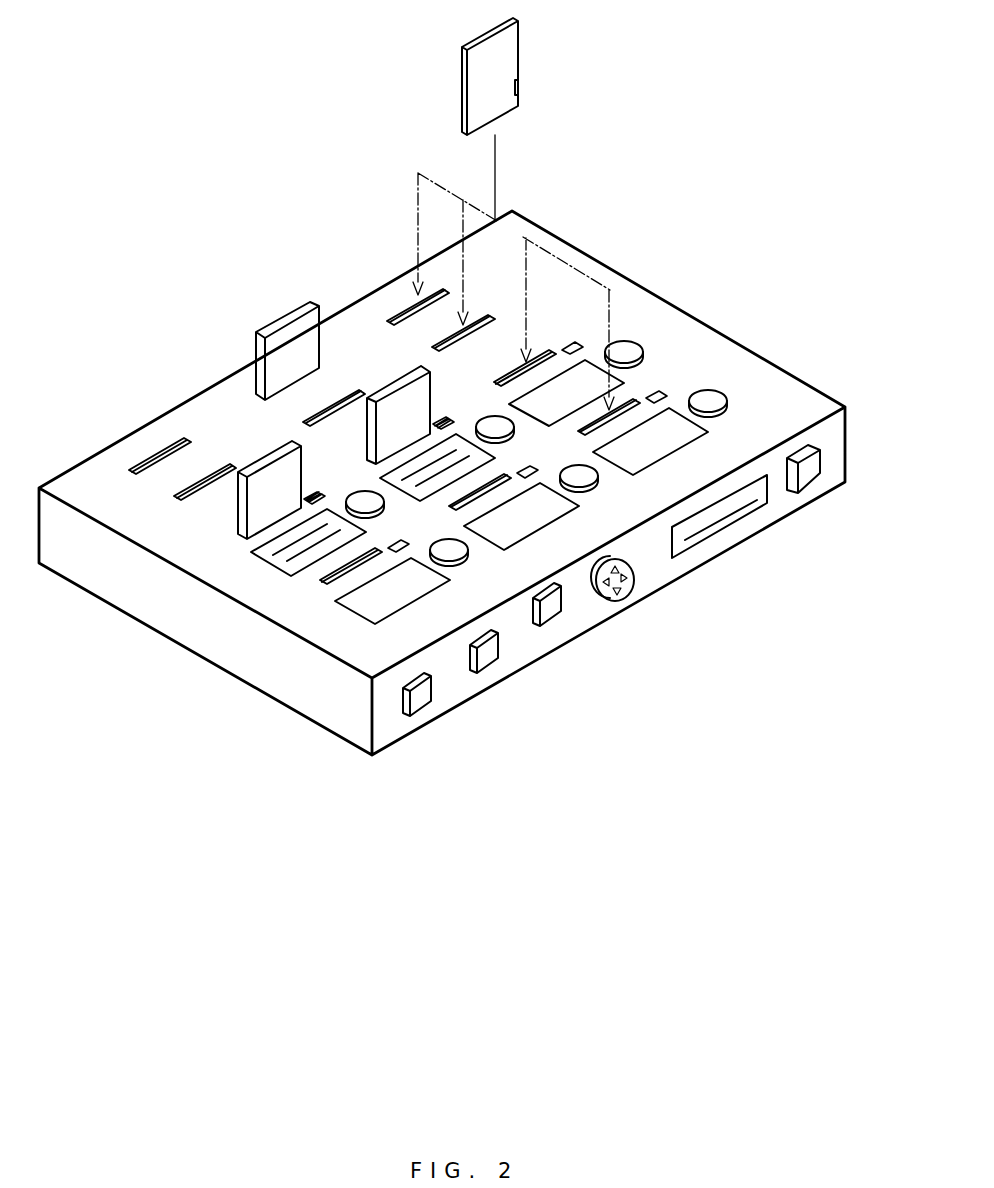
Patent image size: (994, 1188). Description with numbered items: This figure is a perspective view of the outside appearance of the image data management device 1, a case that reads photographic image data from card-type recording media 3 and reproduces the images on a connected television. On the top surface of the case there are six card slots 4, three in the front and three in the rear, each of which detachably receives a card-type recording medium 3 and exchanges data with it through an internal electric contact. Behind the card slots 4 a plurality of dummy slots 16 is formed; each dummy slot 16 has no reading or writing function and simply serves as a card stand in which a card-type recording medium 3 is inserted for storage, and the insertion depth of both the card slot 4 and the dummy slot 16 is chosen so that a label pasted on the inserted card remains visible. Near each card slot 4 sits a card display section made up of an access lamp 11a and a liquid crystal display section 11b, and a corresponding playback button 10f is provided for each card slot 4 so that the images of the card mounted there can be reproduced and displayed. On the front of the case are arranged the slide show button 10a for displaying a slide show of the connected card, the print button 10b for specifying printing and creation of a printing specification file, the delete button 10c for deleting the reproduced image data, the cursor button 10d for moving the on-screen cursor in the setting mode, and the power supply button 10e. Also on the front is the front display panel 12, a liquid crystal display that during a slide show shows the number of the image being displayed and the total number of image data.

The image data management device 1 is at (636, 282).
The card-type recording medium 3 is at (521, 42).
The card slot 4 is at (498, 380).
The slide show button 10a is at (432, 690).
The print button 10b is at (498, 648).
The delete button 10c is at (562, 618).
The cursor button 10d is at (633, 575).
The power supply button 10e is at (823, 455).
The playback button 10f is at (636, 341).
The access lamp 11a is at (662, 388).
The liquid crystal display section 11b is at (358, 622).
The front display panel 12 is at (762, 505).
The dummy slot 16 is at (163, 447).